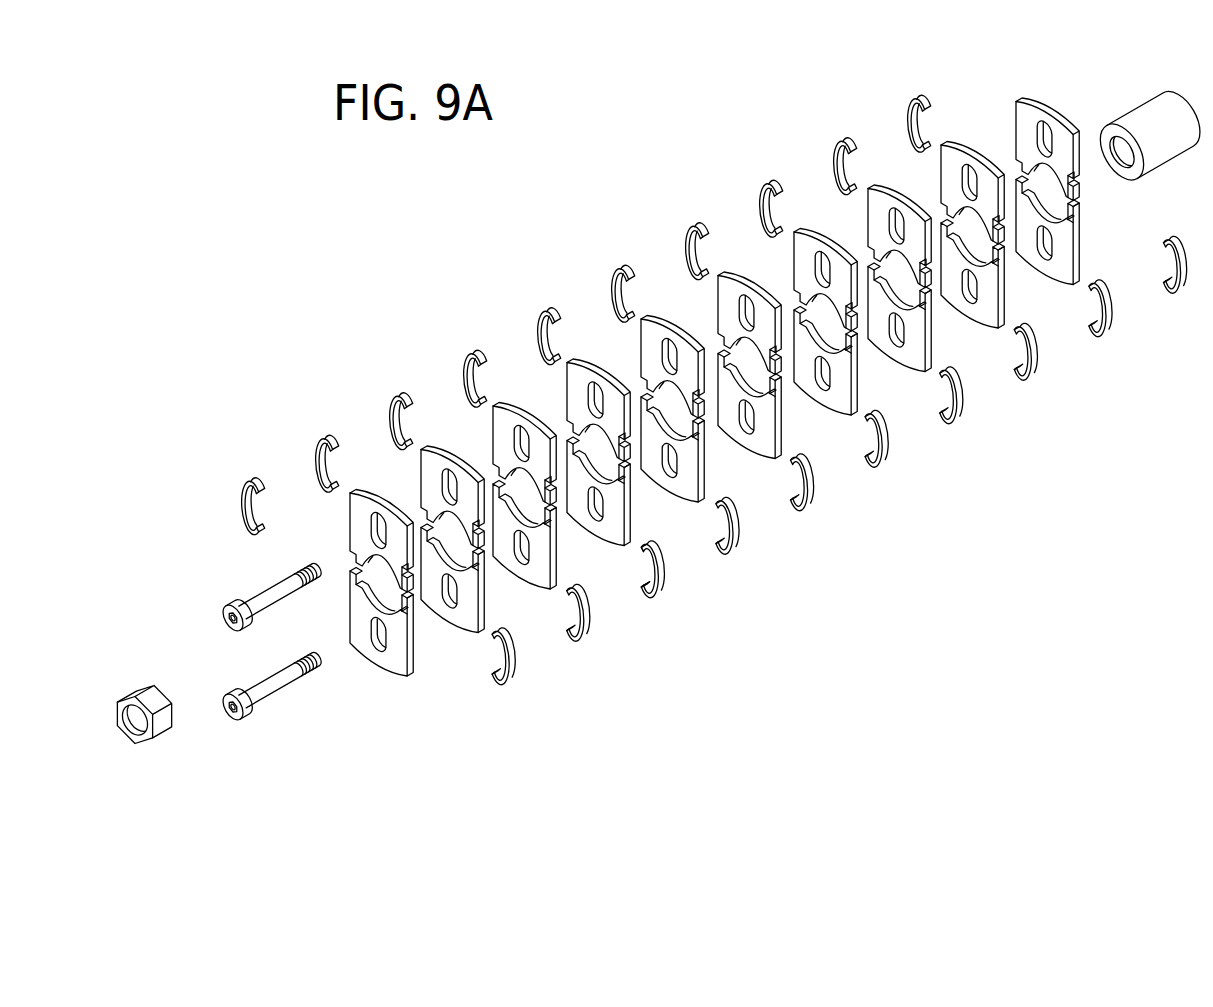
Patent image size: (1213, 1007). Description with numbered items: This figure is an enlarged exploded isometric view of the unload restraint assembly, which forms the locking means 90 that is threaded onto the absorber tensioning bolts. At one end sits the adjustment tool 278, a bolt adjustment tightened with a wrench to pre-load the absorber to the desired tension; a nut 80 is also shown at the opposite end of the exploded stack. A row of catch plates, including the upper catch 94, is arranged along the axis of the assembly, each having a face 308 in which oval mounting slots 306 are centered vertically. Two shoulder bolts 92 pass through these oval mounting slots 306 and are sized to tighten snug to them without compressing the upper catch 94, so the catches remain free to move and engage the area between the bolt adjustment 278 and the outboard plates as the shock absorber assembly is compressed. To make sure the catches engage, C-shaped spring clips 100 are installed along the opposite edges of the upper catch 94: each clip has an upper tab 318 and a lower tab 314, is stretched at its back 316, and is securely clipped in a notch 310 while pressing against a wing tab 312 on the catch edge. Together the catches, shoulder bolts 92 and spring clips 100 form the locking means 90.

The nut 80 is at (158, 732).
The locking means 90 is at (283, 269).
The shoulder bolts 92 is at (250, 692).
The upper catch 94 is at (587, 340).
The C-shaped spring clips 100 is at (393, 398).
The adjustment tool 278 is at (1157, 110).
The oval mounting slots 306 is at (378, 634).
The face 308 is at (381, 622).
The notch 310 is at (410, 605).
The wing tab 312 is at (407, 582).
The lower tab 314 is at (645, 584).
The back 316 is at (662, 575).
The upper tab 318 is at (644, 547).